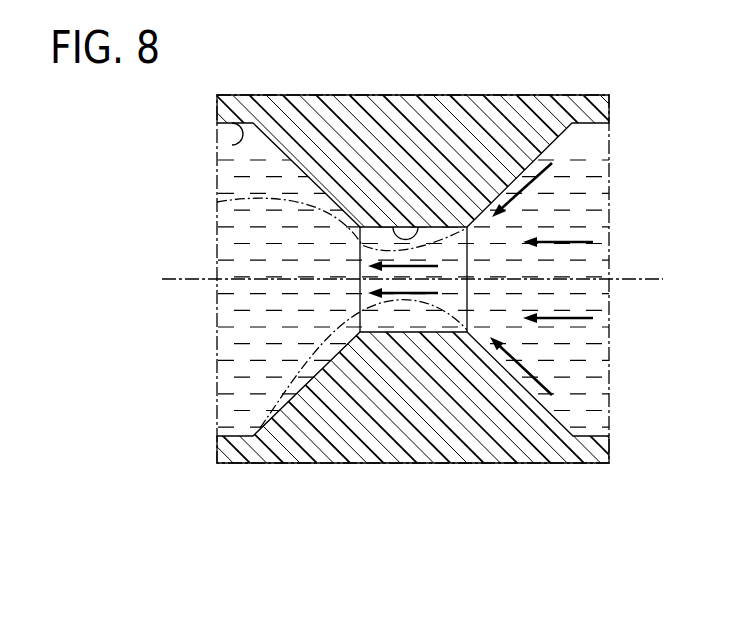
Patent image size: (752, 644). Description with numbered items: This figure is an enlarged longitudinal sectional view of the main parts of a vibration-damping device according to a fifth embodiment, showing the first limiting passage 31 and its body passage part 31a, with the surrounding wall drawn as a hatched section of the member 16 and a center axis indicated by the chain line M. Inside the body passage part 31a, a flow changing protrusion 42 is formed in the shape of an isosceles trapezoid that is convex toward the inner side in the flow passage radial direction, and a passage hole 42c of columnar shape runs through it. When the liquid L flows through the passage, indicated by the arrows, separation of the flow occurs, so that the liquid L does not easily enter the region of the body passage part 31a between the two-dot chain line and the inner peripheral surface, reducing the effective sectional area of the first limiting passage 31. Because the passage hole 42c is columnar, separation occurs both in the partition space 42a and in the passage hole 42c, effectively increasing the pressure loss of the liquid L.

The housing block 16 is at (406, 475).
The first limiting passage 31 is at (580, 353).
The body passage part 31a is at (232, 144).
The flow changing protrusion 42 is at (340, 183).
The partition space 42a is at (553, 180).
The passage hole 42c is at (393, 227).
The liquid L is at (597, 420).
The center axis M is at (640, 280).